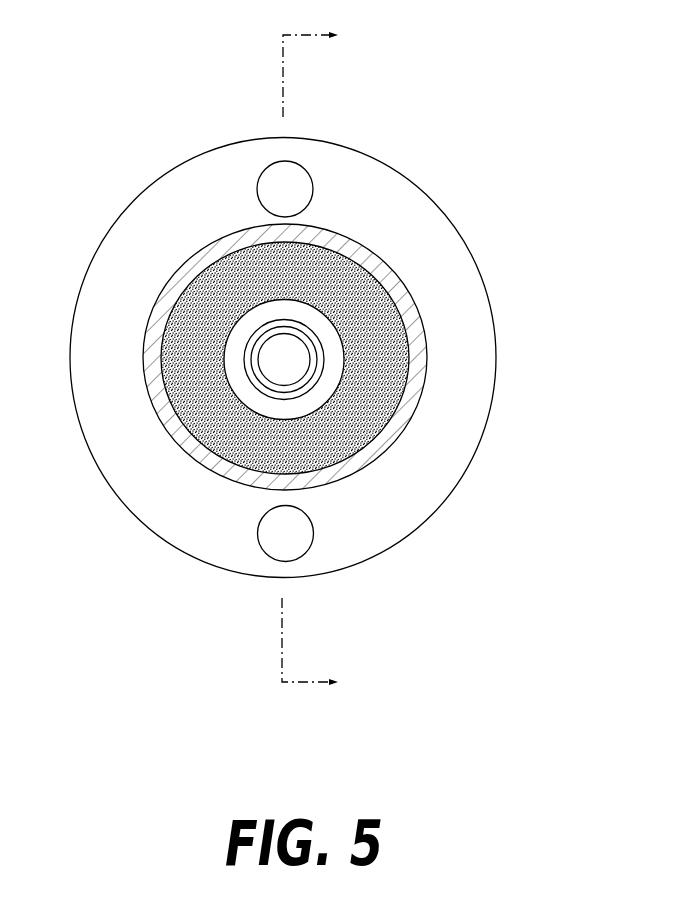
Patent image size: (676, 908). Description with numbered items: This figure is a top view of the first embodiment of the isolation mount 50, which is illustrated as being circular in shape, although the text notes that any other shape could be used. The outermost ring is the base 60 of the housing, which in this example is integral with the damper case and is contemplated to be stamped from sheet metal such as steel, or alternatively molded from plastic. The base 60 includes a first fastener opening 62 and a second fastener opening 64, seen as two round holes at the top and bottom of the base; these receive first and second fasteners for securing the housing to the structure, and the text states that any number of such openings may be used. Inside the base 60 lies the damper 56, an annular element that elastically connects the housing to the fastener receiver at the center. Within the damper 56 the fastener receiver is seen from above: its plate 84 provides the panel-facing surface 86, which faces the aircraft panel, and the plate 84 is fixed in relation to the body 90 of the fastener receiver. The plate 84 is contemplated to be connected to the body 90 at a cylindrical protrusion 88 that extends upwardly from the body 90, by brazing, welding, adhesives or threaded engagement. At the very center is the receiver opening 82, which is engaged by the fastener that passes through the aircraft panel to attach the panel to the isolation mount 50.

The isolation mount 50 is at (452, 132).
The damper 56 is at (187, 457).
The base 60 is at (496, 360).
The first fastener opening 62 is at (272, 173).
The second fastener opening 64 is at (312, 543).
The receiver opening 82 is at (292, 355).
The plate 84 is at (298, 407).
The panel-facing surface 86 is at (172, 353).
The cylindrical protrusion 88 is at (322, 368).
The body 90 is at (258, 343).